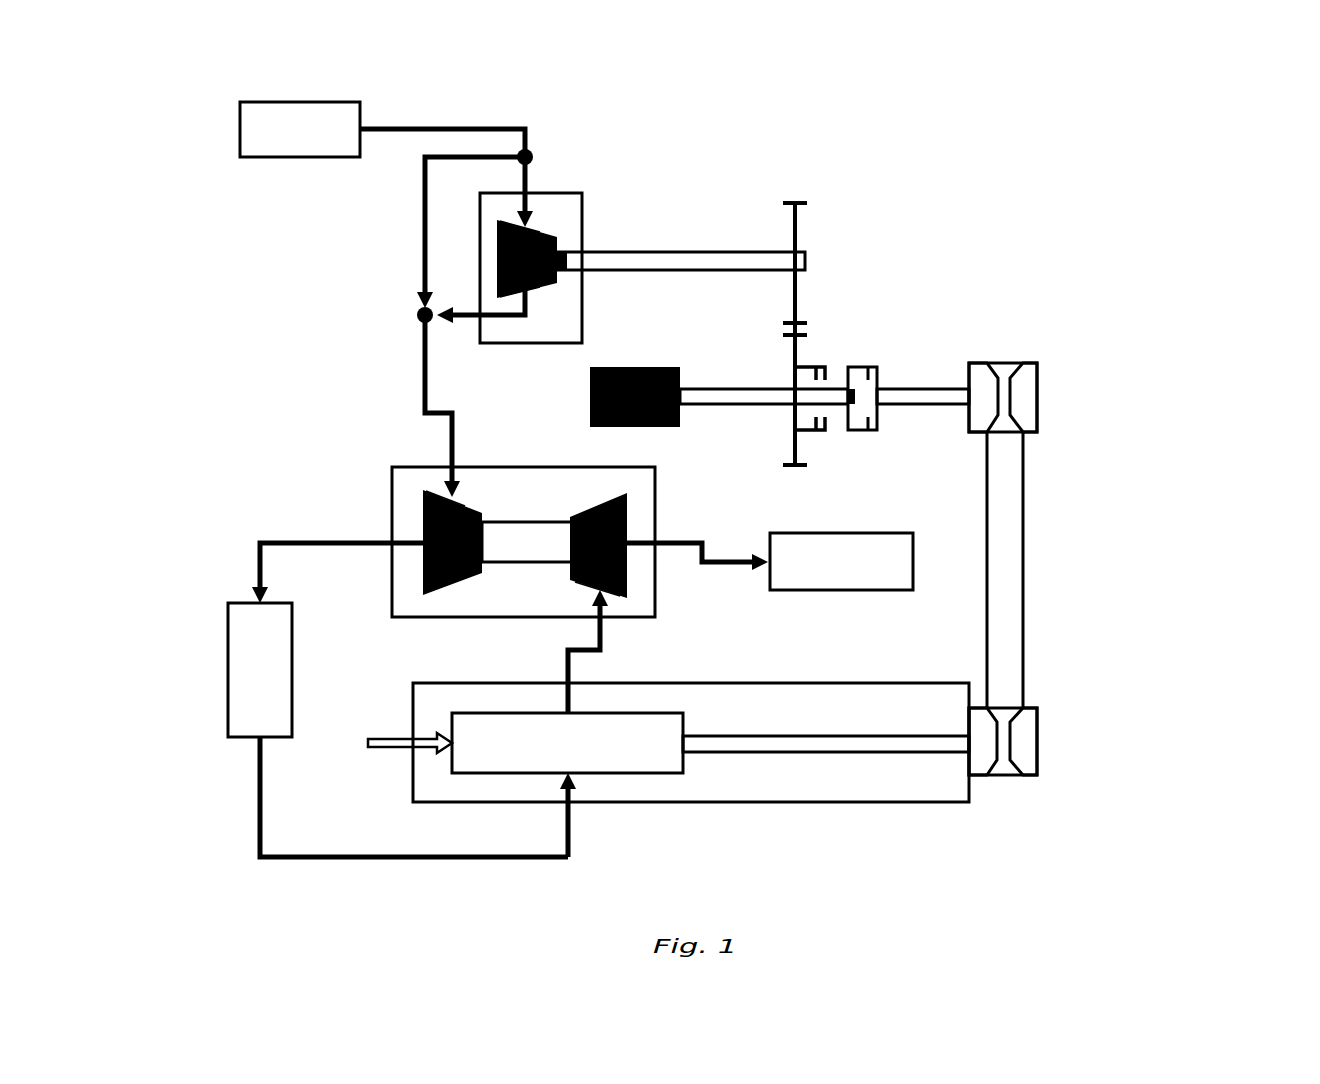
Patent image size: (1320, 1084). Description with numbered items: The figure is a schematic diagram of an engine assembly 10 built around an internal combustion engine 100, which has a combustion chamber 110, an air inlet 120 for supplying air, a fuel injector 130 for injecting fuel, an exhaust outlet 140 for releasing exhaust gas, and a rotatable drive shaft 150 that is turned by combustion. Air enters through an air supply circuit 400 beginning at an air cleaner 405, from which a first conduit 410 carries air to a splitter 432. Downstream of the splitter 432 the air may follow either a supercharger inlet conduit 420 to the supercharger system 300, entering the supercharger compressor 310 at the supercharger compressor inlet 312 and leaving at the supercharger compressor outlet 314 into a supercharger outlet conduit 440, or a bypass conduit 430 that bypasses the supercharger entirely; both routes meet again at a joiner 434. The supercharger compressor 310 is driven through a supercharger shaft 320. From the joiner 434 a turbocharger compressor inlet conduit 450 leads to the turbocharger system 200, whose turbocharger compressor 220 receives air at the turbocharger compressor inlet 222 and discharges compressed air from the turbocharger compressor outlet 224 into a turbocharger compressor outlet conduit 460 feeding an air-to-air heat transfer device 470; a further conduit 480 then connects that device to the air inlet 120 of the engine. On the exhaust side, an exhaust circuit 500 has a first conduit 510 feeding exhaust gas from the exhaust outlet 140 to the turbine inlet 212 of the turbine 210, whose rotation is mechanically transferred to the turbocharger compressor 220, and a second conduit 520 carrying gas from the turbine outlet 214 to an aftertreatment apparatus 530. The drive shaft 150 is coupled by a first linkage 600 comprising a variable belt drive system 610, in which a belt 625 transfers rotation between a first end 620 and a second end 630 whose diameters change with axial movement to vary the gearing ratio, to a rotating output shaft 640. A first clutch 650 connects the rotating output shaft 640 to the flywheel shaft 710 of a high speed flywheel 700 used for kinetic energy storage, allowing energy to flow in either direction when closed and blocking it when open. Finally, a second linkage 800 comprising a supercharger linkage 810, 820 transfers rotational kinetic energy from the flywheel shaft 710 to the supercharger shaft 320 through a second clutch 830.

The engine assembly 10 is at (1185, 168).
The internal combustion engine 100 is at (680, 759).
The combustion chamber 110 is at (567, 743).
The air inlet 120 is at (575, 758).
The fuel injector 130 is at (403, 738).
The exhaust outlet 140 is at (568, 715).
The drive shaft 150 is at (935, 755).
The turbocharger system 200 is at (477, 525).
The turbine 210 is at (575, 512).
The turbine inlet 212 is at (597, 588).
The turbine outlet 214 is at (633, 550).
The turbocharger compressor 220 is at (423, 517).
The turbocharger compressor inlet 222 is at (457, 497).
The turbocharger compressor outlet 224 is at (423, 558).
The supercharger system 300 is at (576, 245).
The supercharger compressor 310 is at (557, 275).
The supercharger compressor inlet 312 is at (530, 225).
The supercharger compressor outlet 314 is at (530, 290).
The supercharger shaft 320 is at (658, 250).
The air supply circuit 400 is at (205, 125).
The air cleaner 405 is at (300, 129).
The first conduit 410 is at (445, 128).
The supercharger inlet conduit 420 is at (540, 180).
The bypass conduit 430 is at (423, 203).
The splitter 432 is at (532, 175).
The joiner 434 is at (420, 314).
The supercharger outlet conduit 440 is at (456, 320).
The turbocharger compressor inlet conduit 450 is at (420, 369).
The turbocharger compressor outlet conduit 460 is at (258, 558).
The air-to-air heat transfer device 470 is at (260, 670).
The further conduit 480 is at (258, 820).
The exhaust circuit 500 is at (586, 651).
The first conduit 510 is at (568, 652).
The second conduit 520 is at (728, 560).
The aftertreatment apparatus 530 is at (841, 561).
The first linkage 600 is at (1064, 815).
The variable belt drive system 610 is at (1061, 377).
The first end 620 is at (1037, 737).
The belt 625 is at (1023, 565).
The second end 630 is at (1037, 400).
The rotating output shaft 640 is at (922, 408).
The first clutch 650 is at (875, 367).
The flywheel 700 is at (635, 397).
The flywheel shaft 710 is at (748, 405).
The second linkage 800 is at (877, 283).
The supercharger linkage 810 is at (798, 355).
The supercharger linkage 820 is at (798, 220).
The second clutch 830 is at (820, 367).